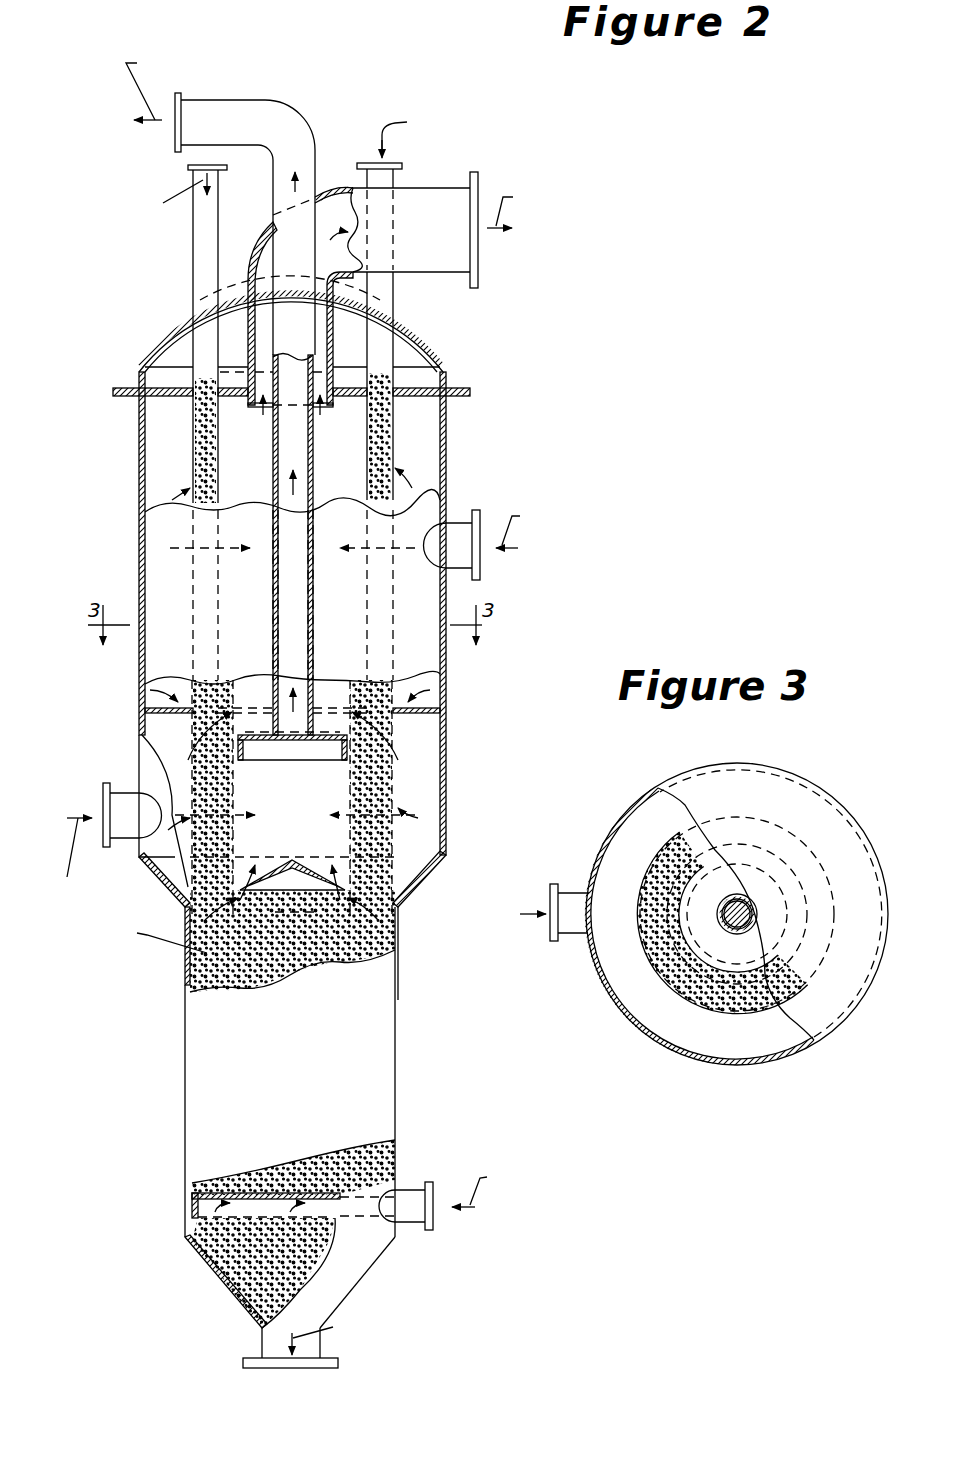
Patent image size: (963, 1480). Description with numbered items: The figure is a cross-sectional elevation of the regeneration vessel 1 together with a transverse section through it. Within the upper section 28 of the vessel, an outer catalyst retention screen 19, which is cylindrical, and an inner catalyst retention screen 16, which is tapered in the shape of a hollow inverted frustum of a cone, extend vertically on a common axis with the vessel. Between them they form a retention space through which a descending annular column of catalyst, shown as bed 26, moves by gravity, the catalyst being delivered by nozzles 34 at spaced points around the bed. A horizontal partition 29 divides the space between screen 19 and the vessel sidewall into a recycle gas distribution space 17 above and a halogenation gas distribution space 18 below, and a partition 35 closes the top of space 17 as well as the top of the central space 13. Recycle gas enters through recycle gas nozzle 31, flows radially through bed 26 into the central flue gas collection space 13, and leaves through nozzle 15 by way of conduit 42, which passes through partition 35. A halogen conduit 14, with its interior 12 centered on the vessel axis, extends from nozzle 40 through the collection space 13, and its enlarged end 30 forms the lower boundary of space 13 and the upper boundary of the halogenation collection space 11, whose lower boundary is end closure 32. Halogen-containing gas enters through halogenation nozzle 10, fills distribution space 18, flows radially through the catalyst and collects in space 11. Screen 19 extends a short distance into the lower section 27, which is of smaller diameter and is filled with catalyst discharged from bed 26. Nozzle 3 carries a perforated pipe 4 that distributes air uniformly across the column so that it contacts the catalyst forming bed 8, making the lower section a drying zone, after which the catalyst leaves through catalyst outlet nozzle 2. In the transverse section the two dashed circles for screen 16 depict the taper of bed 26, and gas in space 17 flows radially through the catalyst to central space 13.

In FIG. 2, the regeneration vessel 1 is at (138, 468).
In FIG. 2, the catalyst outlet nozzle 2 is at (260, 1347).
In FIG. 2, the nozzle 3 is at (408, 1225).
In FIG. 2, the perforated pipe 4 is at (232, 1192).
In FIG. 2, the bed 8 is at (223, 960).
In FIG. 2, the halogenation nozzle 10 is at (105, 785).
In FIG. 3, the halogenation nozzle 10 is at (570, 890).
In FIG. 2, the halogenation collection space 11 is at (298, 810).
In FIG. 2, the interior 12 is at (302, 442).
In FIG. 3, the interior 12 is at (740, 912).
In FIG. 2, the central space 13 is at (255, 488).
In FIG. 3, the central space 13 is at (742, 957).
In FIG. 2, the halogen conduit 14 is at (313, 390).
In FIG. 3, the halogen conduit 14 is at (738, 895).
In FIG. 2, the nozzle 15 is at (478, 257).
In FIG. 2, the inner catalyst retention screen 16 is at (367, 440).
In FIG. 3, the inner catalyst retention screen 16 is at (693, 870).
In FIG. 2, the recycle gas distribution space 17 is at (163, 698).
In FIG. 3, the recycle gas distribution space 17 is at (652, 833).
In FIG. 2, the halogenation gas distribution space 18 is at (168, 732).
In FIG. 2, the outer catalyst retention screen 19 is at (195, 465).
In FIG. 3, the outer catalyst retention screen 19 is at (753, 1008).
In FIG. 2, the bed 26 is at (197, 440).
In FIG. 3, the bed 26 is at (700, 988).
In FIG. 2, the lower section 27 is at (398, 1068).
In FIG. 2, the upper section 28 is at (446, 800).
In FIG. 3, the upper section 28 is at (695, 765).
In FIG. 2, the horizontal partition 29 is at (417, 717).
In FIG. 2, the enlarged end 30 is at (277, 762).
In FIG. 3, the enlarged end 30 is at (787, 900).
In FIG. 2, the recycle gas nozzle 31 is at (478, 520).
In FIG. 2, the end closure 32 is at (300, 860).
In FIG. 2, the nozzles 34 is at (220, 205).
In FIG. 2, the partition 35 is at (138, 368).
In FIG. 2, the nozzle 40 is at (292, 110).
In FIG. 2, the conduit 42 is at (336, 336).